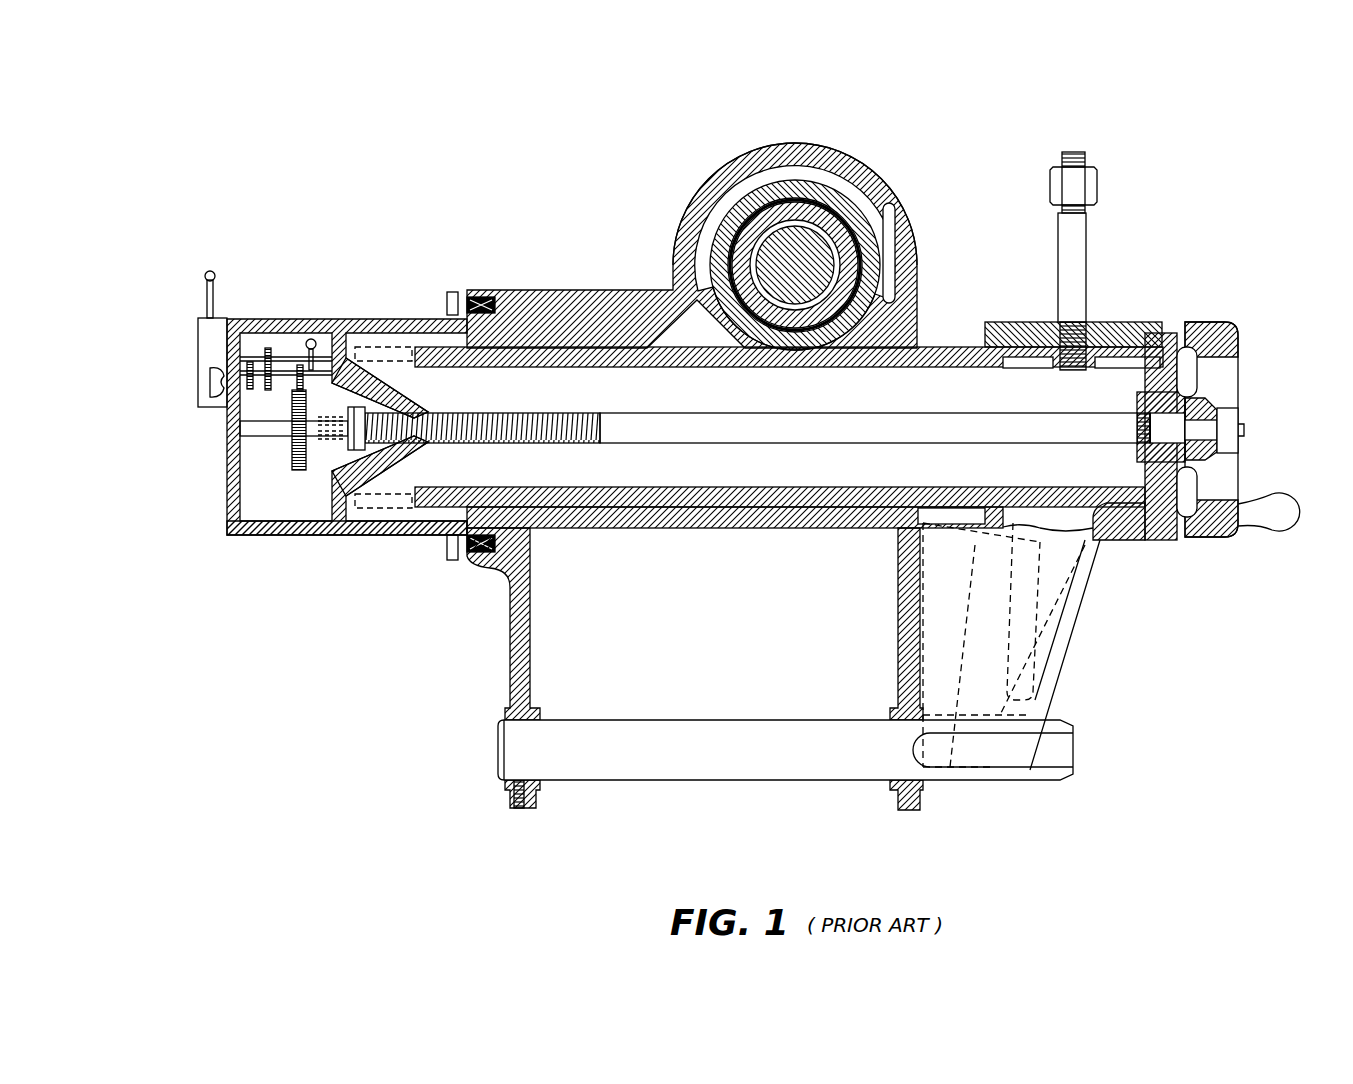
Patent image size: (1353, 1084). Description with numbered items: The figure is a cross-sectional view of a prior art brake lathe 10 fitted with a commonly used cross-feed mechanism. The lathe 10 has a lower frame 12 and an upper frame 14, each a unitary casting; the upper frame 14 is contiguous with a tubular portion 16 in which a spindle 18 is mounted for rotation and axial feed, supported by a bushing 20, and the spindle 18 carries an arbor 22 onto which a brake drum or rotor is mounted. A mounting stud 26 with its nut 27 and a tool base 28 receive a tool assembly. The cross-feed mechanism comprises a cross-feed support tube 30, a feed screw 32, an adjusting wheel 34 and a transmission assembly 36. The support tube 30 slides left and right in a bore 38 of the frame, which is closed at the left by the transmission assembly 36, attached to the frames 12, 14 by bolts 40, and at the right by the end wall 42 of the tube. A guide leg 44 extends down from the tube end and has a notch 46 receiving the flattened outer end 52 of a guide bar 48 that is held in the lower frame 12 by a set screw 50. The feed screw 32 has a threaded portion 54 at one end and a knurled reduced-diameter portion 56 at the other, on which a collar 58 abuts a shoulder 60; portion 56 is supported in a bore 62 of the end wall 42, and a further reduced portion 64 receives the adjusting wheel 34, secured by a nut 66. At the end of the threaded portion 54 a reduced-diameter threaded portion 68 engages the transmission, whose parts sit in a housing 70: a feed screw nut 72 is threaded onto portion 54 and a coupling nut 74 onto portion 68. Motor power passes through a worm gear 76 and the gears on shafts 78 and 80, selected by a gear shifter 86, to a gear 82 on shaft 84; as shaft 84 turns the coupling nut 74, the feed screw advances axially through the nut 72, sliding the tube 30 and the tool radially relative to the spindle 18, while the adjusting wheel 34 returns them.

The lathe 10 is at (960, 118).
The lower frame 12 is at (510, 630).
The upper frame 14 is at (821, 152).
The tubular portion 16 is at (829, 183).
The spindle 18 is at (862, 265).
The bushing 20 is at (886, 250).
The arbor 22 is at (833, 212).
The mounting stud 26 is at (1078, 251).
The nut 27 is at (1078, 187).
The tool base 28 is at (1126, 322).
The cross-feed support tube 30 is at (556, 487).
The feed screw 32 is at (597, 412).
The adjusting wheel 34 is at (1240, 341).
The transmission assembly 36 is at (224, 444).
The bore 38 is at (520, 291).
The bolts 40 is at (448, 297).
The end wall 42 is at (1147, 527).
The guide leg 44 is at (1092, 596).
The notch 46 is at (1048, 695).
The guide bar 48 is at (790, 770).
The set screw 50 is at (521, 809).
The outer end 52 is at (1071, 752).
The threaded portion 54 is at (433, 410).
The reduced-diameter portion 56 is at (1160, 478).
The collar 58 is at (1144, 398).
The shoulder 60 is at (1126, 447).
The bore 62 is at (1142, 430).
The reduced-diameter portion 64 is at (1210, 403).
The nut 66 is at (1240, 424).
The reduced-diameter threaded portion 68 is at (385, 461).
The housing 70 is at (303, 536).
The feed screw nut 72 is at (405, 446).
The coupling nut 74 is at (376, 386).
The worm gear 76 is at (317, 332).
The shaft 78 is at (263, 355).
The shaft 80 is at (287, 380).
The gear 82 is at (294, 463).
The shaft 84 is at (290, 432).
The gear shifter 86 is at (207, 290).